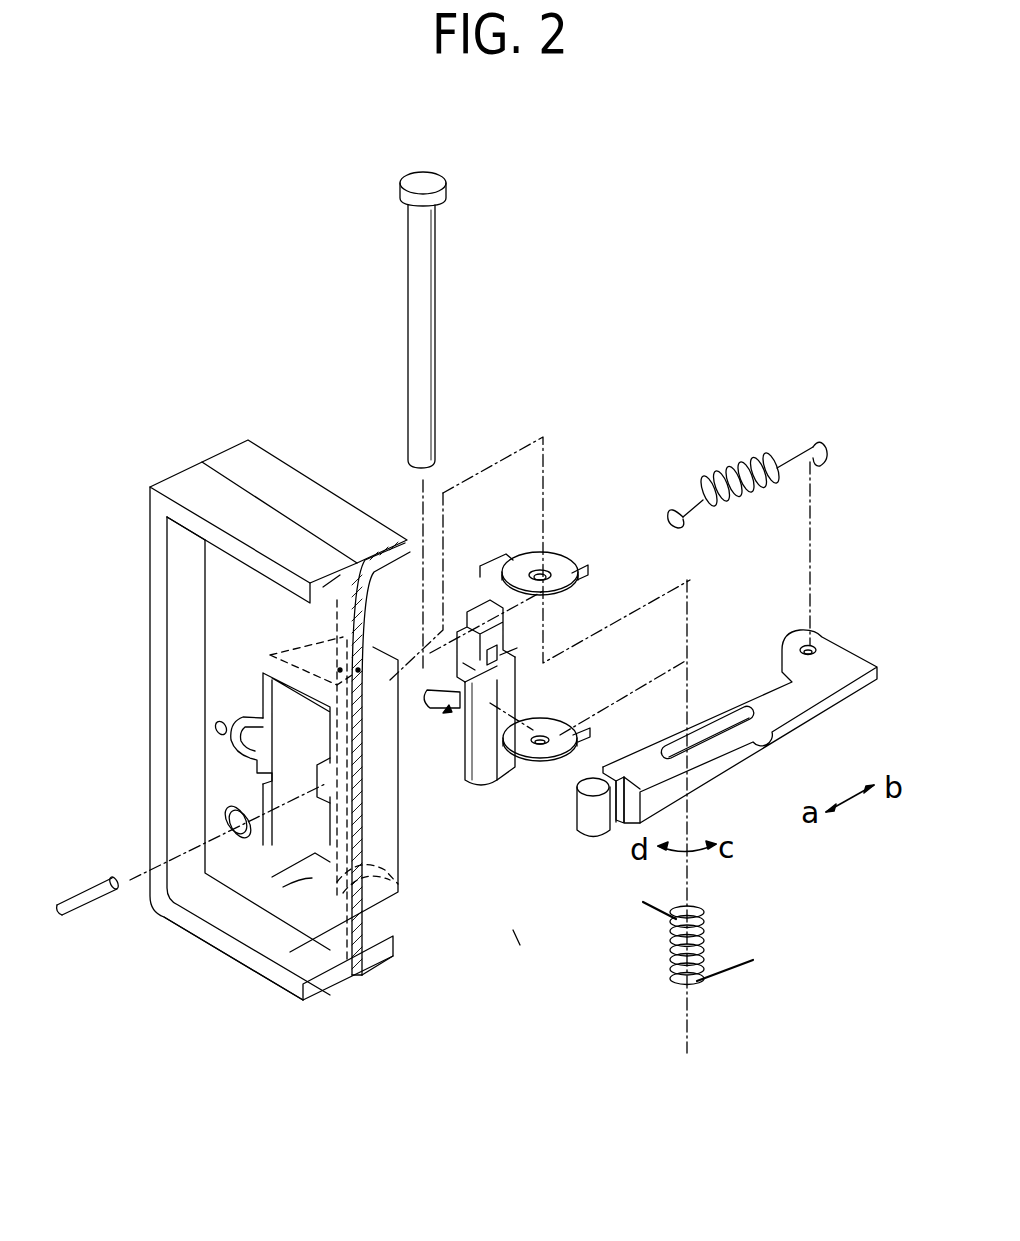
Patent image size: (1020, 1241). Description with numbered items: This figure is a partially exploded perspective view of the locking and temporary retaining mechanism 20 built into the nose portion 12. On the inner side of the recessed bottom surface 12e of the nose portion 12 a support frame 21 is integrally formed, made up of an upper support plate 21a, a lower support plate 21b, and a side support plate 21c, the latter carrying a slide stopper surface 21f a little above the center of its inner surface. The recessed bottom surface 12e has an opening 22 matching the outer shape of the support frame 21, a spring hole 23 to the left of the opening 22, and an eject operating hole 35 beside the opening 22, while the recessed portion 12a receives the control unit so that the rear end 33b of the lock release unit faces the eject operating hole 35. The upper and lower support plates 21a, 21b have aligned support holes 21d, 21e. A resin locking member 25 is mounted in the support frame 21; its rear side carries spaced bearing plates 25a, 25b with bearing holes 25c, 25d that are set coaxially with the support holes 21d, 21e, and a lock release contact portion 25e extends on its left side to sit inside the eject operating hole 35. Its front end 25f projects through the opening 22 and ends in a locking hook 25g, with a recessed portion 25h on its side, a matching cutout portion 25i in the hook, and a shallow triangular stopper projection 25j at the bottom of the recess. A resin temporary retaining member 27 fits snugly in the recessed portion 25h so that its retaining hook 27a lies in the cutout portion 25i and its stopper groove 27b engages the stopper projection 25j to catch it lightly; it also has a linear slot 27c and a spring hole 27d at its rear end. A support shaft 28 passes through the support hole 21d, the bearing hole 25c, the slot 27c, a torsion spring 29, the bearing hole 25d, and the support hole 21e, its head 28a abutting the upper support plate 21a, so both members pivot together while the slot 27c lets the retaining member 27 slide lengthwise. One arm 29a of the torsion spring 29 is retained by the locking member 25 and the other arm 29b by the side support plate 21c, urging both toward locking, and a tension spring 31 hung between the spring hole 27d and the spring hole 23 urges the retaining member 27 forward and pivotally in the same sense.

The nose portion 12 is at (140, 710).
The recessed portion 12a is at (226, 908).
The recessed bottom surface 12e is at (220, 594).
The locking and temporary retaining mechanism 20 is at (515, 935).
The support frame 21 is at (402, 917).
The upper support plate 21a is at (303, 660).
The lower support plate 21b is at (312, 878).
The side support plate 21c is at (398, 848).
The support hole 21d is at (323, 587).
The support hole 21e is at (400, 897).
The slide stopper surface 21f is at (314, 797).
The opening 22 is at (283, 887).
The spring hole 23 is at (212, 728).
The locking member 25 is at (560, 530).
The bearing plate 25a is at (567, 563).
The bearing plate 25b is at (557, 727).
The bearing hole 25c is at (538, 570).
The bearing hole 25d is at (550, 738).
The lock release contact portion 25e is at (443, 713).
The front end 25f is at (505, 753).
The locking hook 25g is at (497, 610).
The recessed portion 25h is at (500, 680).
The cutout portion 25i is at (463, 663).
The stopper projection 25j is at (515, 648).
The temporary retaining member 27 is at (770, 687).
The retaining hook 27a is at (597, 827).
The stopper groove 27b is at (575, 777).
The linear slot 27c is at (725, 723).
The spring hole 27d is at (813, 647).
The support shaft 28 is at (427, 290).
The head 28a is at (433, 183).
The torsion spring 29 is at (705, 953).
The arm 29a is at (650, 912).
The arm 29b is at (733, 977).
The tension spring 31 is at (737, 468).
The rear end 33b is at (85, 907).
The eject operating hole 35 is at (222, 817).